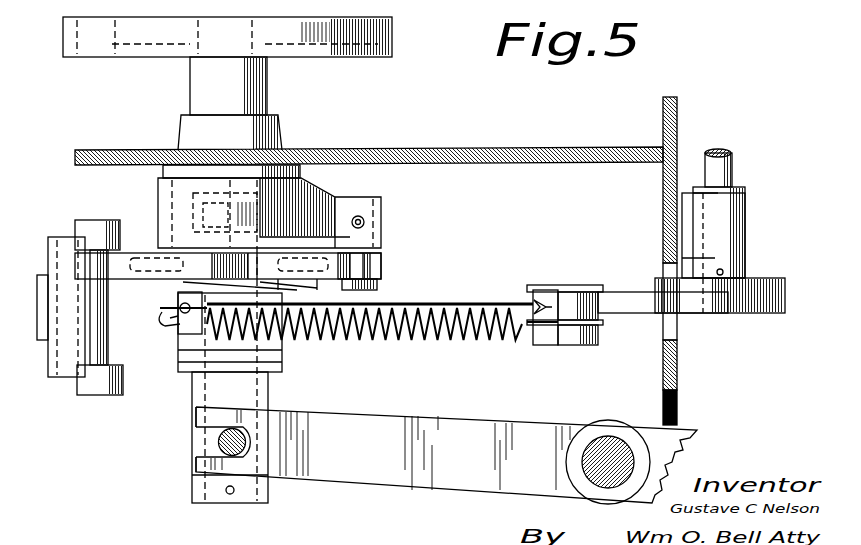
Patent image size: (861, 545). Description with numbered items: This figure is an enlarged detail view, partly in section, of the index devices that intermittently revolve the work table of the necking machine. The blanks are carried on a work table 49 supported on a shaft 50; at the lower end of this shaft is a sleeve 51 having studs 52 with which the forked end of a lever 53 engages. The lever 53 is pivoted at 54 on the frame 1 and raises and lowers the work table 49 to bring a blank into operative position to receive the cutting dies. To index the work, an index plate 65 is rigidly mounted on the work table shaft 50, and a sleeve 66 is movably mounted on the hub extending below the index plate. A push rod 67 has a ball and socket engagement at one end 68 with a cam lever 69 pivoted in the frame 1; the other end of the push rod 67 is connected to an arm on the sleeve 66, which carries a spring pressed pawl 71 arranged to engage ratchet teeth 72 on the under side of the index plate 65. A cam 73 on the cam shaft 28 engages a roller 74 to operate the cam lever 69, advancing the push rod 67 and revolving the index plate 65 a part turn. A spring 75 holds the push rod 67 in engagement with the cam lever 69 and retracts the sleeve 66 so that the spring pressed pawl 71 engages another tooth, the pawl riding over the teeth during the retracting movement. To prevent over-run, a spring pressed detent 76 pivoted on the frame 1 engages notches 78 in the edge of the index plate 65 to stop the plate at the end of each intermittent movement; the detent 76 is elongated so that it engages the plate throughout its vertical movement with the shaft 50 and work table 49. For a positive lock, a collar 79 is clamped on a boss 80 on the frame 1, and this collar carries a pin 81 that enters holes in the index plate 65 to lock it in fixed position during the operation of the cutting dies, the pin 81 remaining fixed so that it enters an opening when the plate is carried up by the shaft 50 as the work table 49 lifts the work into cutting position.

The frame 1 is at (488, 147).
The cam shaft 28 is at (733, 155).
The work table 49 is at (392, 30).
The work table shaft 50 is at (268, 100).
The sleeve 51 is at (196, 435).
The studs 52 is at (218, 443).
The lever 53 is at (480, 402).
The pivot 54 is at (612, 440).
The index plate 65 is at (382, 270).
The sleeve 66 is at (272, 340).
The push rod 67 is at (488, 296).
The ball and socket engagement 68 is at (533, 300).
The cam lever 69 is at (570, 342).
The spring pressed pawl 71 is at (170, 296).
The ratchet teeth 72 is at (262, 287).
The cam 73 is at (760, 298).
The roller 74 is at (585, 286).
The spring 75 is at (422, 340).
The spring pressed detent 76 is at (98, 350).
The notches 78 is at (218, 258).
The collar 79 is at (167, 194).
The boss 80 is at (158, 198).
The pin 81 is at (378, 288).